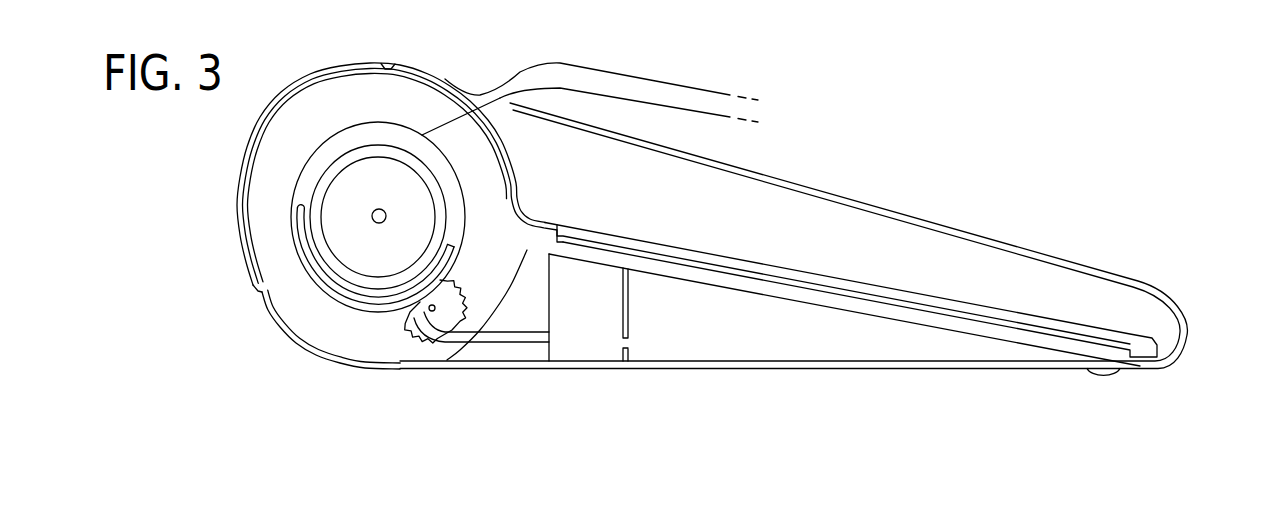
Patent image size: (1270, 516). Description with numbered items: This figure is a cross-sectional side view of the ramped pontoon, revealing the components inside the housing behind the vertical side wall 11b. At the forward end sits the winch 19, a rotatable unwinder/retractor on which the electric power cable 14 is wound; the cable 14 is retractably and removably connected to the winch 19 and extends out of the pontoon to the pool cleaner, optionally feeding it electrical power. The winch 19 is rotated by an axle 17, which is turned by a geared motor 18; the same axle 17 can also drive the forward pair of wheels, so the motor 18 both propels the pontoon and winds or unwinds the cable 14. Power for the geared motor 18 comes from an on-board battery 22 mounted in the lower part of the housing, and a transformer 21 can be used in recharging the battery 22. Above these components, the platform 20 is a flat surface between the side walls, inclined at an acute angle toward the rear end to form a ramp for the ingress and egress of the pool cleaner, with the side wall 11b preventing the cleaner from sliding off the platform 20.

The vertical side wall 11b is at (750, 214).
The electric power cable 14 is at (604, 82).
The axle 17 is at (372, 213).
The geared motor 18 is at (419, 336).
The winch 19 is at (353, 247).
The platform 20 is at (845, 268).
The transformer 21 is at (580, 345).
The on-board battery 22 is at (782, 338).